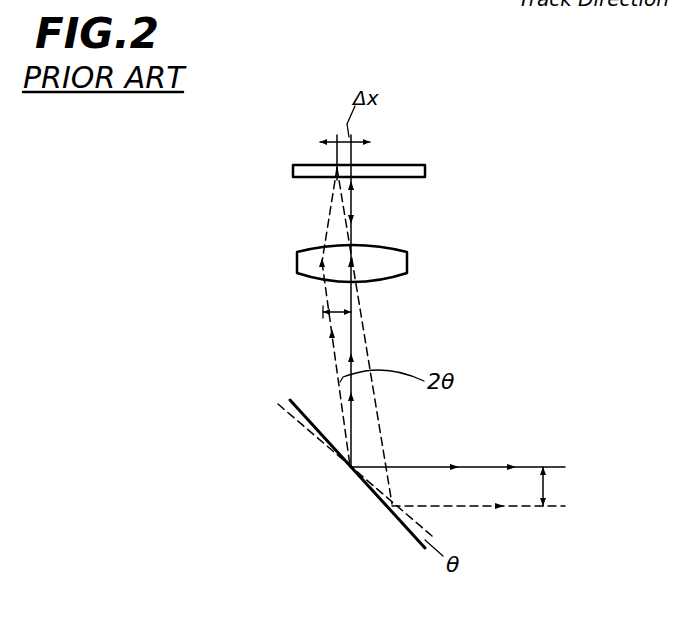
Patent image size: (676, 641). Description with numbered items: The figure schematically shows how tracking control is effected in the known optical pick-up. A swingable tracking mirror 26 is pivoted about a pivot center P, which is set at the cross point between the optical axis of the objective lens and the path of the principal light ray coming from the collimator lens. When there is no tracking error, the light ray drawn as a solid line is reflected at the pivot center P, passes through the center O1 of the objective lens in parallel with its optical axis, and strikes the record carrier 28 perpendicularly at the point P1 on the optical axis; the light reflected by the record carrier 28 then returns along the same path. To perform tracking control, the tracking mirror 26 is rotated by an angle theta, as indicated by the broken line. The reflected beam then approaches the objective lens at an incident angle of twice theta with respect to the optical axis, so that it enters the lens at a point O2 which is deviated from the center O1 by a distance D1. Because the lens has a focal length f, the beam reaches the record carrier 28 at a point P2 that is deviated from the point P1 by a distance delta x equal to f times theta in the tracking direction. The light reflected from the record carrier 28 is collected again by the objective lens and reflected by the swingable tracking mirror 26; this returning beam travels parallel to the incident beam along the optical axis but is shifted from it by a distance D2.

The swingable tracking mirror 26 is at (390, 516).
The record carrier 28 is at (425, 171).
The pivot center P is at (347, 467).
The point on the optical axis P1 is at (357, 163).
The deviated incidence point P2 is at (333, 162).
The center of the objective lens O1 is at (355, 262).
The deviated incidence point on the objective lens O2 is at (320, 263).
The deviation distance at the objective lens D1 is at (347, 313).
The shift distance of the reflected beam D2 is at (547, 487).